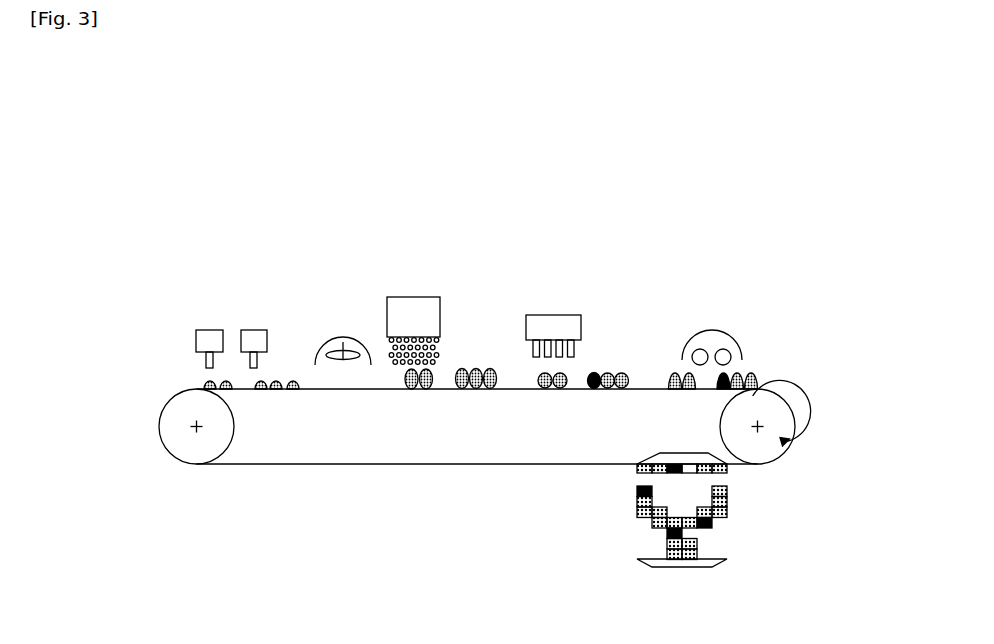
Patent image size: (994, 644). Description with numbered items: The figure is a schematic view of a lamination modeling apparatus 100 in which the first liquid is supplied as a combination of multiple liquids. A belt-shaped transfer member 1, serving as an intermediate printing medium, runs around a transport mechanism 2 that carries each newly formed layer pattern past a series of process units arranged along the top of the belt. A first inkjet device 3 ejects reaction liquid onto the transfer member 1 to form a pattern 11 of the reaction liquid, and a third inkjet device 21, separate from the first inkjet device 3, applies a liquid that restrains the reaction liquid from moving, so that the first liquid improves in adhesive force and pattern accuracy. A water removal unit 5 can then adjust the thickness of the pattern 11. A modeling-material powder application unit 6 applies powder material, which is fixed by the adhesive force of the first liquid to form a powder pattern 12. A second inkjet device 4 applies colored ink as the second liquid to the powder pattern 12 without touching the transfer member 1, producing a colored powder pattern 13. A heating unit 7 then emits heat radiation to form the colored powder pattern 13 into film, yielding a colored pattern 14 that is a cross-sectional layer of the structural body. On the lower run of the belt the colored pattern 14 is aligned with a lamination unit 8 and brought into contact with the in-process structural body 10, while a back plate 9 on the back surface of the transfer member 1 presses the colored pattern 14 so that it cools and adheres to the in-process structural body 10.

The lamination modeling apparatus 100 is at (604, 192).
The belt-shaped transfer member 1 is at (323, 464).
The transport mechanism 2 is at (197, 456).
The first inkjet device 3 is at (209, 330).
The third inkjet device 21 is at (251, 330).
The water removal unit 5 is at (337, 337).
The modeling-material powder application unit 6 is at (412, 297).
The second inkjet device 4 is at (552, 315).
The heating unit 7 is at (718, 328).
The lamination unit 8 is at (700, 569).
The back plate 9 is at (662, 453).
The in-process structural body 10 is at (626, 518).
The pattern of the reaction liquid 11 is at (298, 400).
The powder pattern 12 is at (405, 400).
The colored powder pattern 13 is at (540, 401).
The colored pattern 14 is at (764, 367).